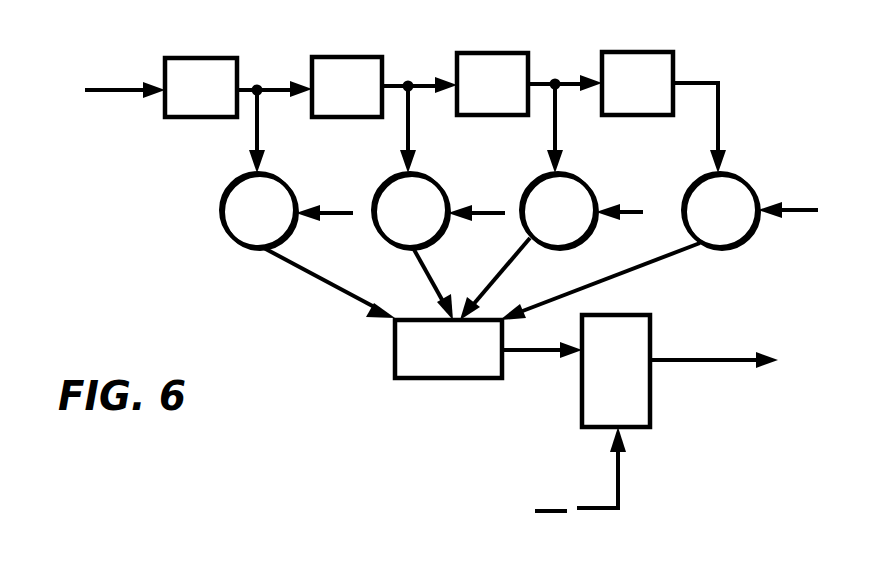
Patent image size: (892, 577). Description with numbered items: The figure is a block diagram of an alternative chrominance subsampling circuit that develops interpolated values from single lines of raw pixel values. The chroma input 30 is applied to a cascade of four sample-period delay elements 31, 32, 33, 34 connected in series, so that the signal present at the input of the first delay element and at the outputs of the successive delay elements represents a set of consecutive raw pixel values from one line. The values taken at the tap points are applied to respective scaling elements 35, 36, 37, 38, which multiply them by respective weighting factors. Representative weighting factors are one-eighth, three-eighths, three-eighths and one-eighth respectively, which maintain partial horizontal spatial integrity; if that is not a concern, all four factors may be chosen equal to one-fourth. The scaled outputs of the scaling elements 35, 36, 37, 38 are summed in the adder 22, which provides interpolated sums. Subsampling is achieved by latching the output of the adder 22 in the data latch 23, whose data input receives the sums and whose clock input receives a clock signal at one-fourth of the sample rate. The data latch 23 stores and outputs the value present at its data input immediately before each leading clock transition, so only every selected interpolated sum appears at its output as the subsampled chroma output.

The chroma input 30 is at (128, 86).
The delay element 31 is at (227, 57).
The delay element 32 is at (378, 56).
The delay element 33 is at (512, 50).
The delay element 34 is at (658, 52).
The scaling element 35 is at (222, 232).
The scaling element 36 is at (383, 236).
The scaling element 37 is at (525, 232).
The scaling element 38 is at (727, 248).
The adder 22 is at (392, 353).
The data latch 23 is at (582, 411).